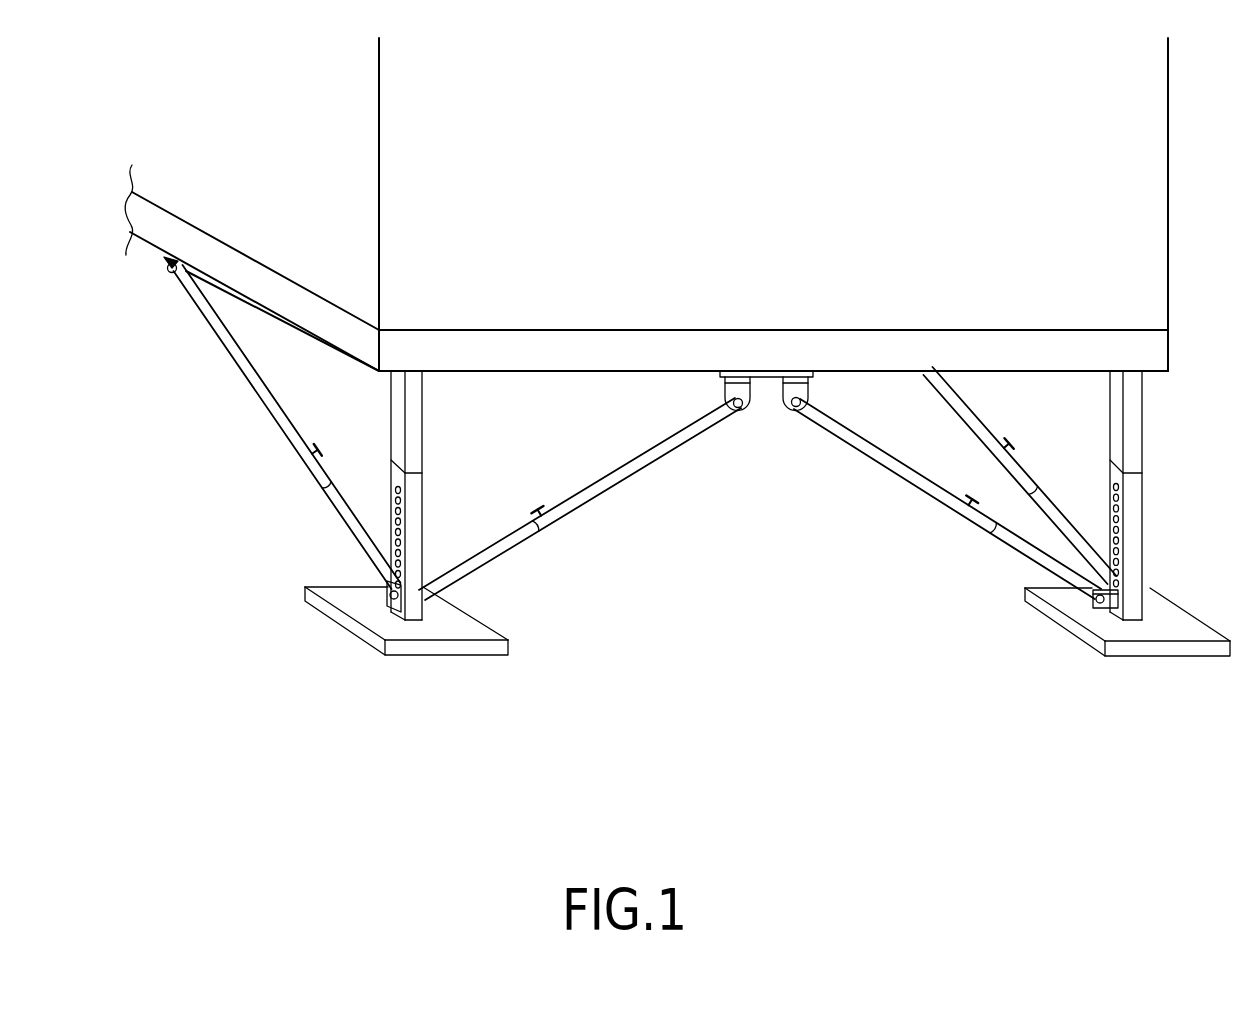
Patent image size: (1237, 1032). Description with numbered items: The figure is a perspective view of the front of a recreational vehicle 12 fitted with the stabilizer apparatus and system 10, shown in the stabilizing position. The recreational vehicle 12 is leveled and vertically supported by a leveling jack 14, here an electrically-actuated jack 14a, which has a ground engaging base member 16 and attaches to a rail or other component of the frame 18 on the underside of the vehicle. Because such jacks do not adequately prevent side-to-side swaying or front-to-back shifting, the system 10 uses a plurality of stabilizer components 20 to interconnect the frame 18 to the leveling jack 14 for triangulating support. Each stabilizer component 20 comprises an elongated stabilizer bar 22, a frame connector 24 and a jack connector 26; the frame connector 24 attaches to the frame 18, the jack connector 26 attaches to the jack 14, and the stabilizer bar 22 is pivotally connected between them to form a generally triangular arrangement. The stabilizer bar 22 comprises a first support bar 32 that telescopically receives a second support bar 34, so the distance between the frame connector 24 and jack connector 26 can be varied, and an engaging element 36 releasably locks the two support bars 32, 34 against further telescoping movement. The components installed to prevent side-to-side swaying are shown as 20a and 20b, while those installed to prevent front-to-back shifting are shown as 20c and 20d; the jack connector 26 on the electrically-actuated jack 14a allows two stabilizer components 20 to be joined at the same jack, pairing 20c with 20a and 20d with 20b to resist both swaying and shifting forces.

The stabilizer apparatus and system 10 is at (782, 590).
The recreational vehicle 12 is at (1106, 290).
The leveling jack 14 is at (1162, 507).
The electrically-actuated jack 14a is at (420, 450).
The base member 16 is at (1158, 632).
The frame 18 is at (160, 237).
The stabilizer component 20 is at (271, 481).
The stabilizer component 20a is at (580, 499).
The stabilizer component 20b is at (947, 499).
The stabilizer component 20c is at (238, 372).
The stabilizer component 20d is at (972, 403).
The stabilizer bar 22 is at (613, 507).
The frame connector 24 is at (757, 425).
The jack connector 26 is at (375, 598).
The first support bar 32 is at (850, 450).
The second support bar 34 is at (1014, 562).
The engaging element 36 is at (949, 473).